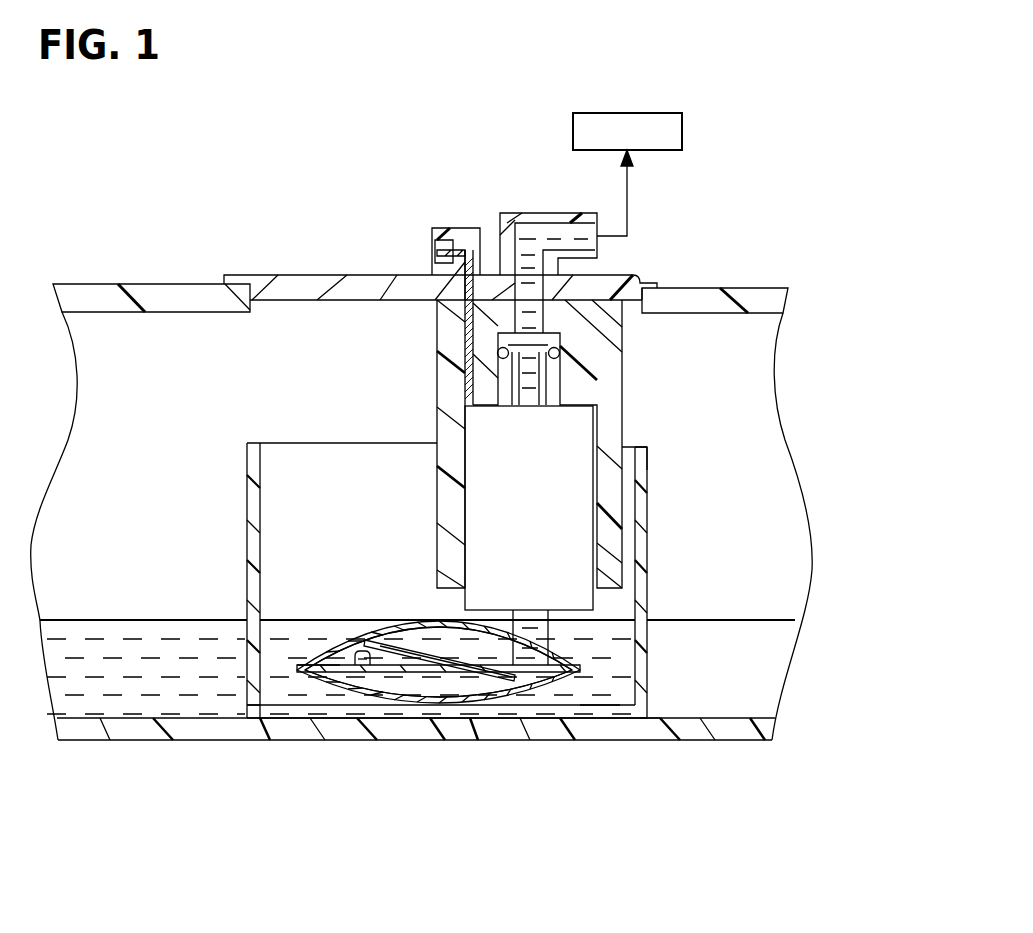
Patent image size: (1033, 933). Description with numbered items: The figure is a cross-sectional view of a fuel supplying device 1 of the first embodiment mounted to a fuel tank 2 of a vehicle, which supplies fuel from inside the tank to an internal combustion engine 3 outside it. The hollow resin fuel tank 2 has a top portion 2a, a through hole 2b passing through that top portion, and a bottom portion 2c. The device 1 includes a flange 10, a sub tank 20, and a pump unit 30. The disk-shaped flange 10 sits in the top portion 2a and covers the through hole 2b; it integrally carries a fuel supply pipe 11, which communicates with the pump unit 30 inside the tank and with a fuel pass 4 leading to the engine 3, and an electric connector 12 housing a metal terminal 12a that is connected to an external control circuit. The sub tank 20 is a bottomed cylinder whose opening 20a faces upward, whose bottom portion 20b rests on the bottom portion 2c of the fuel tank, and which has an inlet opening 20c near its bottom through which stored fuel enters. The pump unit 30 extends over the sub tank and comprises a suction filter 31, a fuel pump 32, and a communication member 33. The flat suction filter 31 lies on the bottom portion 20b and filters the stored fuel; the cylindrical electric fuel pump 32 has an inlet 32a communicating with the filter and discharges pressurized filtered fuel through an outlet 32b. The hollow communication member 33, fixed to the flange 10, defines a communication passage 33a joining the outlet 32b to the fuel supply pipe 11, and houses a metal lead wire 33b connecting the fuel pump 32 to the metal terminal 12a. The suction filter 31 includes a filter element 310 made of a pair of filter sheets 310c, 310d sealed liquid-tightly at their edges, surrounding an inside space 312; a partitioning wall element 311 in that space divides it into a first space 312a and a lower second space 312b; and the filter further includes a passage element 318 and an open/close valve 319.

The fuel supplying device 1 is at (216, 168).
The fuel tank 2 is at (74, 284).
The top portion 2a is at (728, 288).
The through hole 2b is at (641, 280).
The bottom portion 2c is at (746, 740).
The internal combustion engine 3 is at (670, 113).
The fuel pass 4 is at (628, 193).
The flange 10 is at (240, 275).
The fuel supply pipe 11 is at (538, 213).
The electric connector 12 is at (458, 228).
The metal terminal 12a is at (445, 252).
The sub tank 20 is at (247, 443).
The opening 20a is at (636, 447).
The bottom portion 20b is at (598, 712).
The inlet opening 20c is at (243, 705).
The pump unit 30 is at (622, 500).
The suction filter 31 is at (578, 663).
The fuel pump 32 is at (593, 553).
The inlet 32a is at (550, 655).
The outlet 32b is at (545, 378).
The communication member 33 is at (620, 572).
The communication passage 33a is at (558, 341).
The metal lead wire 33b is at (465, 365).
The filter element 310 is at (405, 795).
The filter sheet 310c is at (375, 704).
The filter sheet 310d is at (332, 698).
The partitioning wall element 311 is at (466, 650).
The inside space 312 is at (652, 890).
The first space 312a is at (475, 688).
The second space 312b is at (508, 692).
The passage element 318 is at (430, 672).
The open/close valve 319 is at (338, 660).